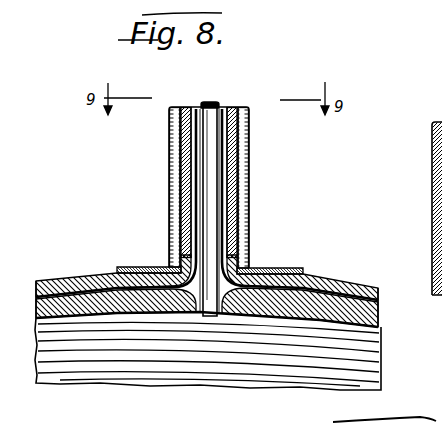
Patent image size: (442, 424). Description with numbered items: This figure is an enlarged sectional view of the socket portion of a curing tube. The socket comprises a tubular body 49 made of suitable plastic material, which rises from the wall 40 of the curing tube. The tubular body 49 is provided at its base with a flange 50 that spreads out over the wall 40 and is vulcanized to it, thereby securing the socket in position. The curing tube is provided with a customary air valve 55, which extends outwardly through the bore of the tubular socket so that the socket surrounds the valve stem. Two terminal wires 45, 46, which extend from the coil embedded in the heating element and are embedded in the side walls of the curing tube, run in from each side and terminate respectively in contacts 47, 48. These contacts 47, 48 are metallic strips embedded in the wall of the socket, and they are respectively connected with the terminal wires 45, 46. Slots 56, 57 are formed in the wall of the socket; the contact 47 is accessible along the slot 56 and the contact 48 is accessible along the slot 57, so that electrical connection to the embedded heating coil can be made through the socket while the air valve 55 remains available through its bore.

The curing tube wall 40 is at (378, 345).
The terminal wire 45 is at (66, 291).
The terminal wire 46 is at (333, 288).
The contact 47 is at (184, 181).
The contact 48 is at (237, 175).
The tubular socket 49 is at (250, 228).
The flange 50 is at (271, 269).
The air valve 55 is at (217, 103).
The slot 56 is at (172, 146).
The slot 57 is at (246, 150).